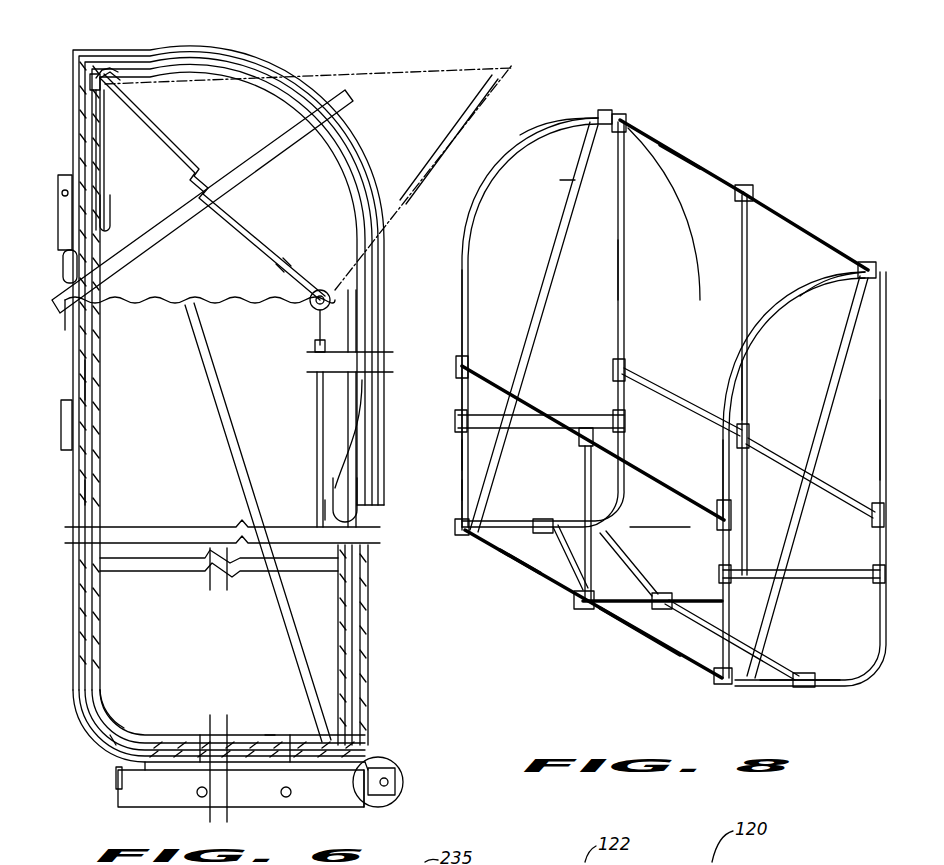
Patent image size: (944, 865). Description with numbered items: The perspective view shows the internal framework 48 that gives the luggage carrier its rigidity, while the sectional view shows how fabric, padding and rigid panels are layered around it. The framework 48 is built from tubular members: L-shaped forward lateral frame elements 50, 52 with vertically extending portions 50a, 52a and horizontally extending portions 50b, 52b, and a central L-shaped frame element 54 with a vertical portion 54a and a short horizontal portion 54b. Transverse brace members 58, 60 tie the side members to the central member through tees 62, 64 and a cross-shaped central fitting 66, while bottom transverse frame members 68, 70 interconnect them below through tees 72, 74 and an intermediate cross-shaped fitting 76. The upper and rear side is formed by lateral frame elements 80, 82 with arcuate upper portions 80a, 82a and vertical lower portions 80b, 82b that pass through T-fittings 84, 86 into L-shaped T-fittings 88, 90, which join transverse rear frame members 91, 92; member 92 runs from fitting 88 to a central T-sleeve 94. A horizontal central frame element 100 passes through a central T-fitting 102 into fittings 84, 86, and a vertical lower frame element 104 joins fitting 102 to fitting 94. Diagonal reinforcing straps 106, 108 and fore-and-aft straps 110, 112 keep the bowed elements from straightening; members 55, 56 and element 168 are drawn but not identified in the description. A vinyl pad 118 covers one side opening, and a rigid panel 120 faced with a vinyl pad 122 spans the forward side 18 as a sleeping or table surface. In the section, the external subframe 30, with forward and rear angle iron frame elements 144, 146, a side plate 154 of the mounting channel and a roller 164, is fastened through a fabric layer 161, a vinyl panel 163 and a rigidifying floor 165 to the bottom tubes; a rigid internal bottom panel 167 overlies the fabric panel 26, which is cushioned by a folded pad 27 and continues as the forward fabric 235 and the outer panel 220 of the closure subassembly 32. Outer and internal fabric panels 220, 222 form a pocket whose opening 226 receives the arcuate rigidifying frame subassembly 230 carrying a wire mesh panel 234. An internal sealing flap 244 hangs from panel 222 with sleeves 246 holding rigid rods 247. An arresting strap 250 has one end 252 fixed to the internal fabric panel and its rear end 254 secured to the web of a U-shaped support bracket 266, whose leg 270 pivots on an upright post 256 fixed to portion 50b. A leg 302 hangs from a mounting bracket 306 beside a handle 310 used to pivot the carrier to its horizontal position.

In FIG. 6, the forward side 18 is at (58, 354).
In FIG. 6, the rearwardly facing panel 26 is at (337, 580).
In FIG. 6, the vinyl pad 27 is at (343, 613).
In FIG. 6, the external subframe 30 is at (104, 756).
In FIG. 6, the closure subassembly 32 is at (400, 300).
In FIG. 8, the internal framework 48 is at (720, 162).
In FIG. 8, the forward lateral frame element 50 is at (622, 215).
In FIG. 8, the vertically extending portion 50a is at (622, 276).
In FIG. 8, the horizontally extending portion 50b is at (463, 545).
In FIG. 8, the forward lateral frame element 52 is at (878, 350).
In FIG. 6, the vertically extending portion 52a is at (90, 384).
In FIG. 8, the vertically extending portion 52a is at (878, 440).
In FIG. 6, the horizontally extending portion 52b is at (127, 727).
In FIG. 8, the horizontally extending portion 52b is at (843, 677).
In FIG. 8, the central L-shaped frame element 54 is at (740, 244).
In FIG. 8, the vertically extending portion 54a is at (748, 384).
In FIG. 8, the horizontally extending portion 54b is at (700, 584).
In FIG. 8, the top rail front section 55 is at (688, 160).
In FIG. 8, the top rail rear section 56 is at (798, 218).
In FIG. 8, the transverse brace member 58 is at (658, 382).
In FIG. 8, the transverse brace member 60 is at (808, 475).
In FIG. 8, the tee 62 is at (623, 370).
In FIG. 8, the tee 64 is at (874, 520).
In FIG. 8, the cross-shaped central connecting fitting 66 is at (748, 434).
In FIG. 8, the bottom transverse frame member 68 is at (574, 551).
In FIG. 8, the bottom transverse frame member 70 is at (668, 605).
In FIG. 8, the tee 72 is at (550, 523).
In FIG. 8, the tee 74 is at (803, 688).
In FIG. 8, the intermediate cross-shaped fitting 76 is at (653, 640).
In FIG. 8, the lateral frame element 80 is at (483, 177).
In FIG. 8, the arcuate upper portion 80a is at (537, 127).
In FIG. 8, the vertically extending lower portion 80b is at (464, 282).
In FIG. 8, the lateral frame element 82 is at (803, 280).
In FIG. 8, the arcuate upper portion 82a is at (823, 300).
In FIG. 6, the vertically extending lower portion 82b is at (352, 396).
In FIG. 8, the vertically extending lower portion 82b is at (720, 444).
In FIG. 8, the T-fitting 84 is at (464, 358).
In FIG. 8, the T-fitting 86 is at (693, 520).
In FIG. 8, the L-shaped T-fitting 88 is at (458, 528).
In FIG. 8, the L-shaped T-fitting 90 is at (724, 684).
In FIG. 8, the transverse rear frame member 91 is at (627, 627).
In FIG. 8, the lower rear frame member 92 is at (533, 563).
In FIG. 8, the central T-sleeve 94 is at (580, 604).
In FIG. 6, the central frame element 100 is at (353, 477).
In FIG. 8, the central frame element 100 is at (527, 416).
In FIG. 8, the central T-fitting 102 is at (580, 448).
In FIG. 8, the central vertically extending lower frame element 104 is at (588, 544).
In FIG. 6, the first diagonal flexible reinforcing strap 106 is at (213, 400).
In FIG. 8, the first diagonal flexible reinforcing strap 106 is at (837, 334).
In FIG. 8, the second diagonal reinforcing strap 108 is at (572, 184).
In FIG. 6, the fore-and-aft flexible reinforcing strap 110 is at (133, 567).
In FIG. 8, the fore-and-aft flexible reinforcing strap 110 is at (823, 575).
In FIG. 8, the fore-and-aft flexible reinforcing strap 112 is at (460, 458).
In FIG. 8, the vinyl panel 118 is at (592, 310).
In FIG. 6, the rigid panel 120 is at (70, 435).
In FIG. 8, the rigid panel 120 is at (650, 178).
In FIG. 6, the vinyl pad 122 is at (80, 490).
In FIG. 6, the forward angle iron frame element 144 is at (120, 777).
In FIG. 6, the rear angle iron frame element 146 is at (400, 797).
In FIG. 6, the side plate 154 is at (340, 790).
In FIG. 6, the layer of flexible fabric 161 is at (170, 763).
In FIG. 6, the panel of smooth vinyl cushioning pad 163 is at (288, 757).
In FIG. 6, the roller 164 is at (393, 773).
In FIG. 6, the Masonite panel 165 is at (207, 762).
In FIG. 6, the rigid internal bottom panel 167 is at (270, 730).
In FIG. 6, the wheel assembly 168 is at (387, 770).
In FIG. 6, the outer fabric panel 220 is at (250, 64).
In FIG. 6, the internal fabric panel 222 is at (290, 104).
In FIG. 6, the opening 226 is at (96, 50).
In FIG. 6, the arcuate rigidifying frame subassembly 230 is at (350, 192).
In FIG. 6, the wire mesh panel 234 is at (188, 58).
In FIG. 6, the forward fabric 235 is at (77, 612).
In FIG. 6, the internal sealing flap 244 is at (357, 440).
In FIG. 6, the elongated sleeves 246 is at (327, 517).
In FIG. 6, the rigid rods 247 is at (323, 503).
In FIG. 6, the arresting strap 250 is at (372, 70).
In FIG. 6, the end of arresting strap 252 is at (92, 108).
In FIG. 6, the rear end of arresting strap 254 is at (125, 110).
In FIG. 6, the upright post 256 is at (443, 136).
In FIG. 6, the U-shaped support bracket 266 is at (238, 238).
In FIG. 6, the leg of support bracket 270 is at (257, 233).
In FIG. 6, the leg 302 is at (67, 343).
In FIG. 6, the mounting bracket 306 is at (106, 172).
In FIG. 6, the handle 310 is at (63, 252).